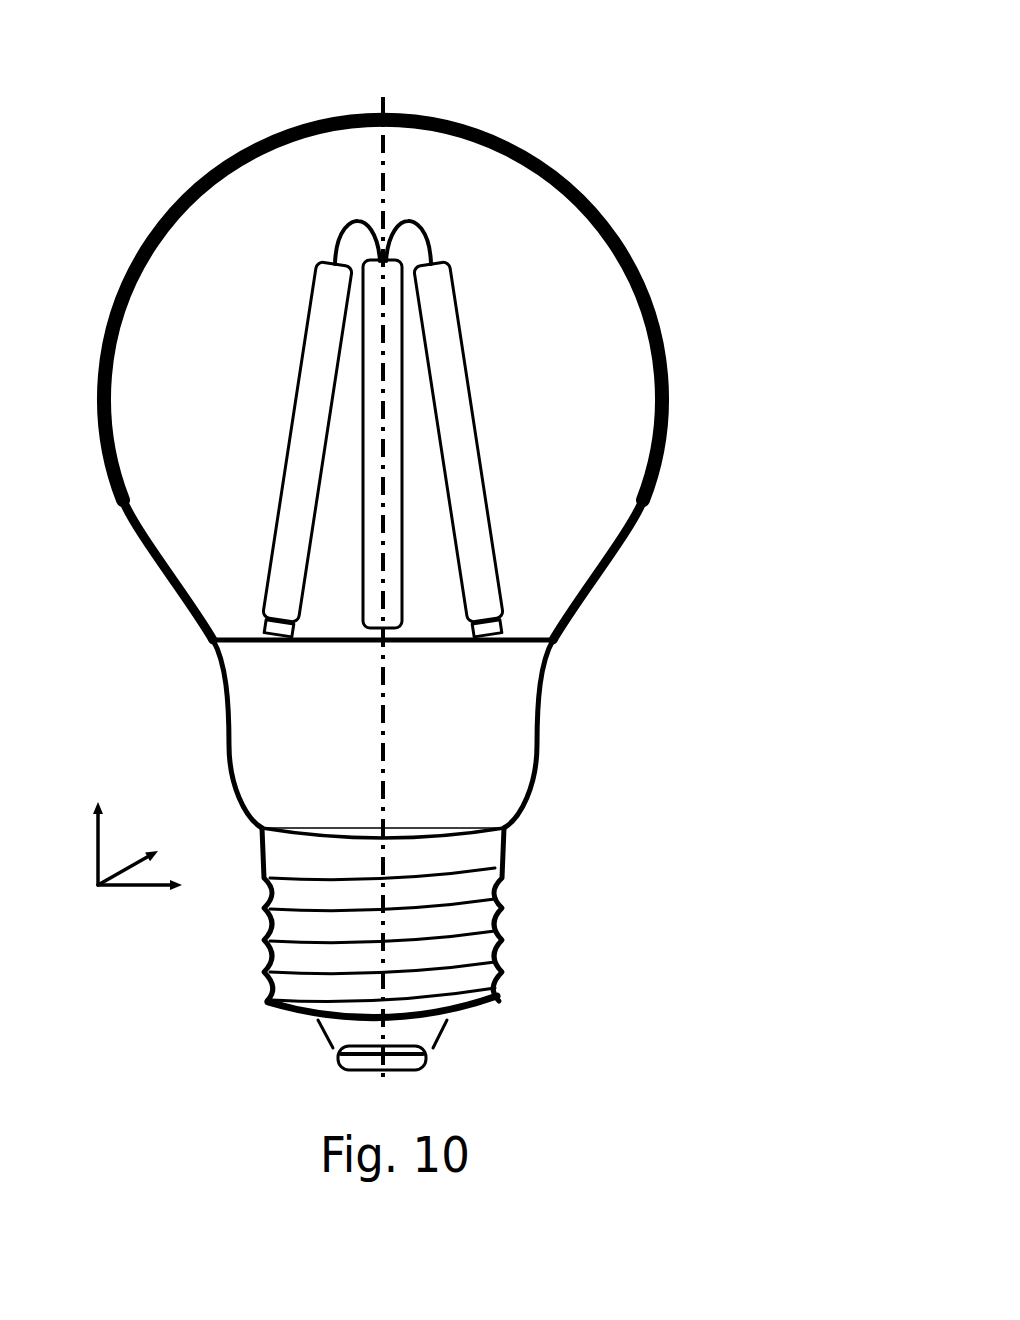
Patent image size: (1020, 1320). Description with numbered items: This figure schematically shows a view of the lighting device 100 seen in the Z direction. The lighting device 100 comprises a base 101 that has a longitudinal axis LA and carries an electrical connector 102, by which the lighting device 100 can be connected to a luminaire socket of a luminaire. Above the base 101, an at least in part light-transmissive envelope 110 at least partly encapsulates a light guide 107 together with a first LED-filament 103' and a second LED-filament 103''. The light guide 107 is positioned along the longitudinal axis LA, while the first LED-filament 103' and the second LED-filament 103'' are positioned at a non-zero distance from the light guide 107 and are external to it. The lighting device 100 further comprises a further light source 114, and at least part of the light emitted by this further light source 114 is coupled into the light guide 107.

The lighting device 100 is at (434, 568).
The at least in part light-transmissive envelope 110 is at (686, 321).
The base 101 is at (548, 907).
The electrical connector 102 is at (415, 1070).
The first LED-filament 103' is at (256, 449).
The second LED-filament 103'' is at (502, 449).
The light guide 107 is at (344, 370).
The further light source 114 is at (505, 637).